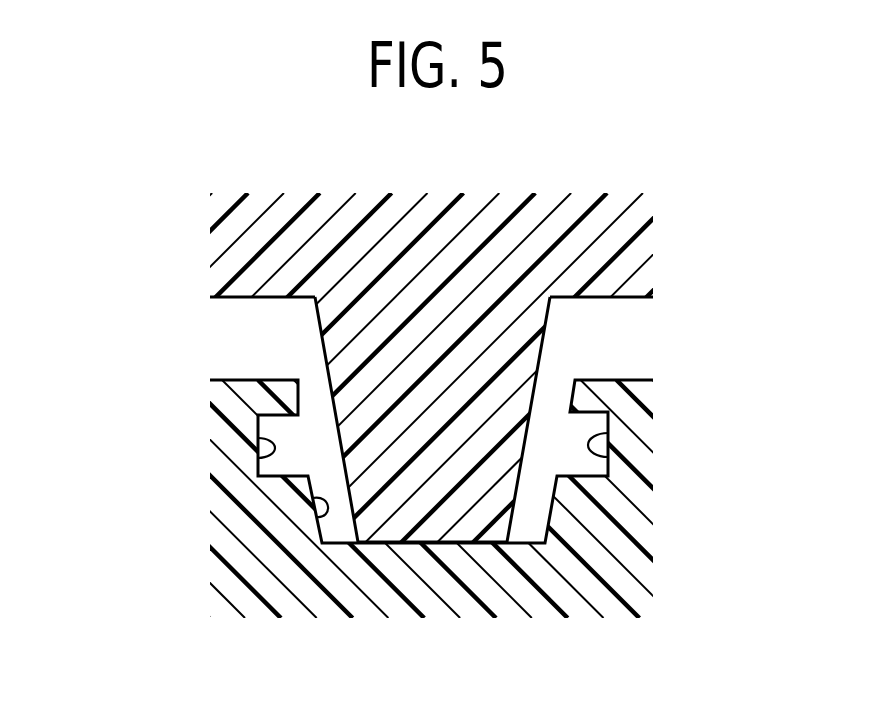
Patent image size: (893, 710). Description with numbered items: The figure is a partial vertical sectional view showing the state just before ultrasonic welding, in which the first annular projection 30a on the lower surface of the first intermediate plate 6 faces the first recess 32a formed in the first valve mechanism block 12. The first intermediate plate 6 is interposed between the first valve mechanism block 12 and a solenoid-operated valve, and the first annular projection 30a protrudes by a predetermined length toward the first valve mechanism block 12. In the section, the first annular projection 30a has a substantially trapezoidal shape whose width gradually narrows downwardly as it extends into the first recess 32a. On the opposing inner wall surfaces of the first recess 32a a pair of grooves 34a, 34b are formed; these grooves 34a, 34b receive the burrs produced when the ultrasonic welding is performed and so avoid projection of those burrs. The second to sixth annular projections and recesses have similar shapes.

The first intermediate plate 6 is at (429, 368).
The first valve mechanism block 12 is at (597, 583).
The first annular projection 30a is at (418, 508).
The first recess 32a is at (322, 514).
The groove 34a is at (276, 448).
The groove 34b is at (606, 459).